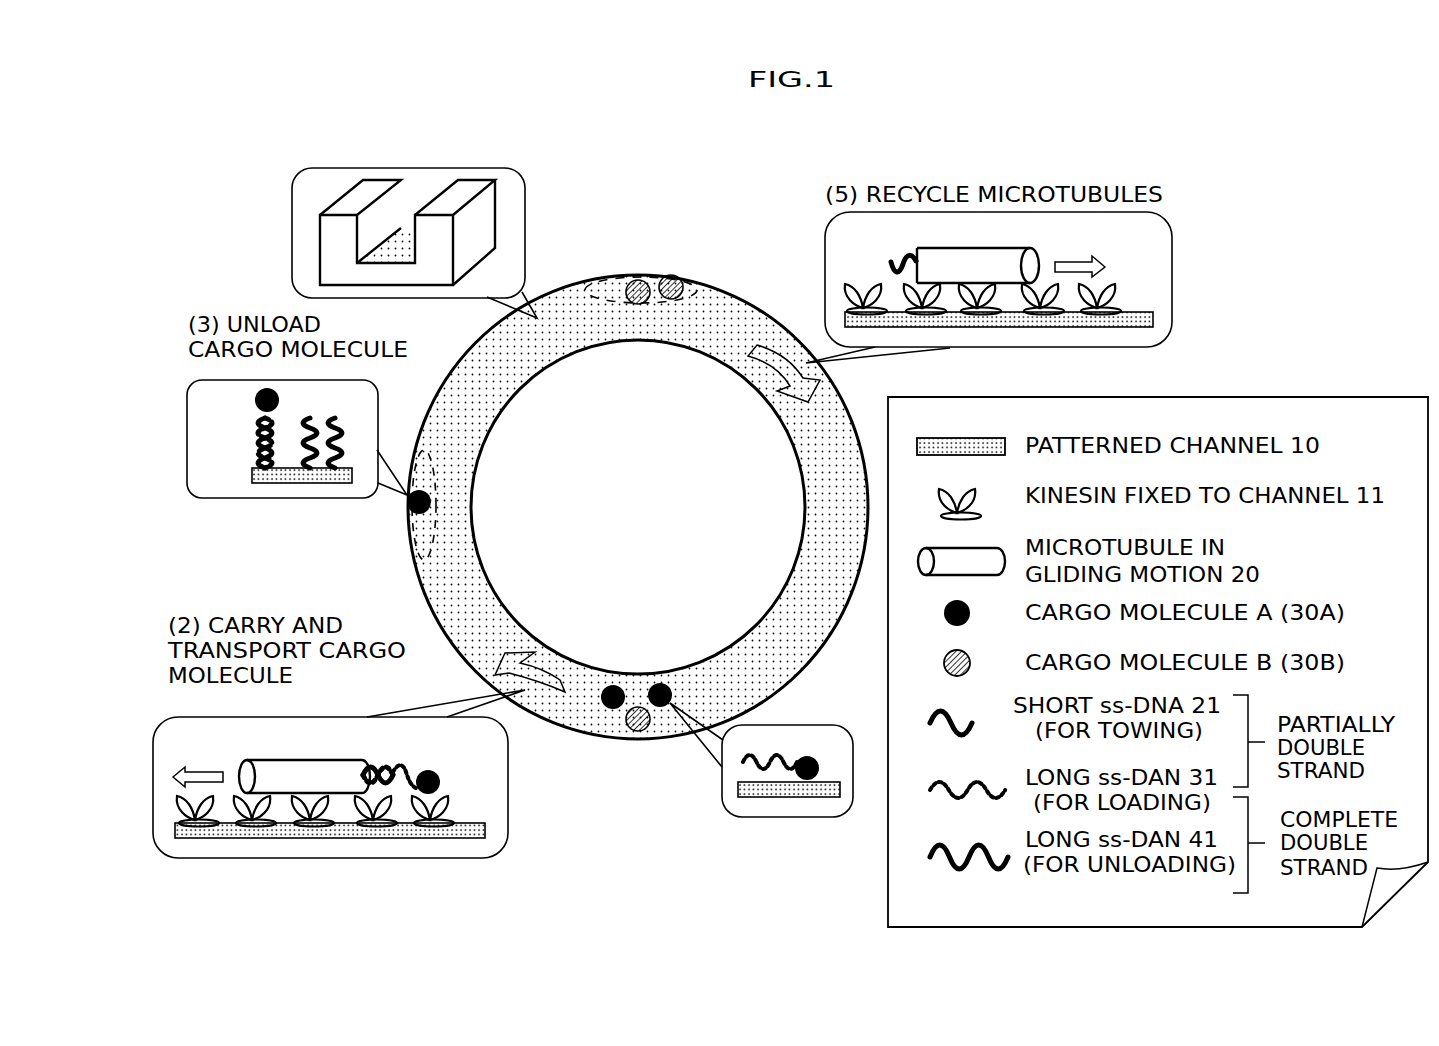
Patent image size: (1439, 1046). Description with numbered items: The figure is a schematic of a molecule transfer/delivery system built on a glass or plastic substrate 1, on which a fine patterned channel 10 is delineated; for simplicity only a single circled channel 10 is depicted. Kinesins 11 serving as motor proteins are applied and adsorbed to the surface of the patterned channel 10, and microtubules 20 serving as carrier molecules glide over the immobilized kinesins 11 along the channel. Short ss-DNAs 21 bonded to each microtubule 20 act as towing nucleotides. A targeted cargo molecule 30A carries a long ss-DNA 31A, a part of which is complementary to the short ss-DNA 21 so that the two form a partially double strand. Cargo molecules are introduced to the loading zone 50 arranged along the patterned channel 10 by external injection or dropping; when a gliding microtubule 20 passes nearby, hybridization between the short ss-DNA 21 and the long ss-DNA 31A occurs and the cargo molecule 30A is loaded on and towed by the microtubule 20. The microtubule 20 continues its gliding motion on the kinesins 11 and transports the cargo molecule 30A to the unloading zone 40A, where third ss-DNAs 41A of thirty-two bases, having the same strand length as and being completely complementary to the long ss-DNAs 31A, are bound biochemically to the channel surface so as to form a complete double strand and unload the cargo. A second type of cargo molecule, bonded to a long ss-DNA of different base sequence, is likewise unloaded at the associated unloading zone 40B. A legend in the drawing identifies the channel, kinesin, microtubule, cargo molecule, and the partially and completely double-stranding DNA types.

The substrate 1 is at (327, 237).
The patterned channel 10 is at (754, 304).
The kinesins 11 is at (1113, 283).
The microtubules 20 is at (280, 760).
The short ss-DNAs 21 is at (380, 767).
The targeted cargo molecule 30A is at (442, 778).
The long ss-DNA 31A is at (258, 432).
The third ss-DNA 41A is at (259, 420).
The unloading zone 40A is at (345, 508).
The unloading zone 40B is at (645, 242).
The loading zone 50 is at (621, 762).